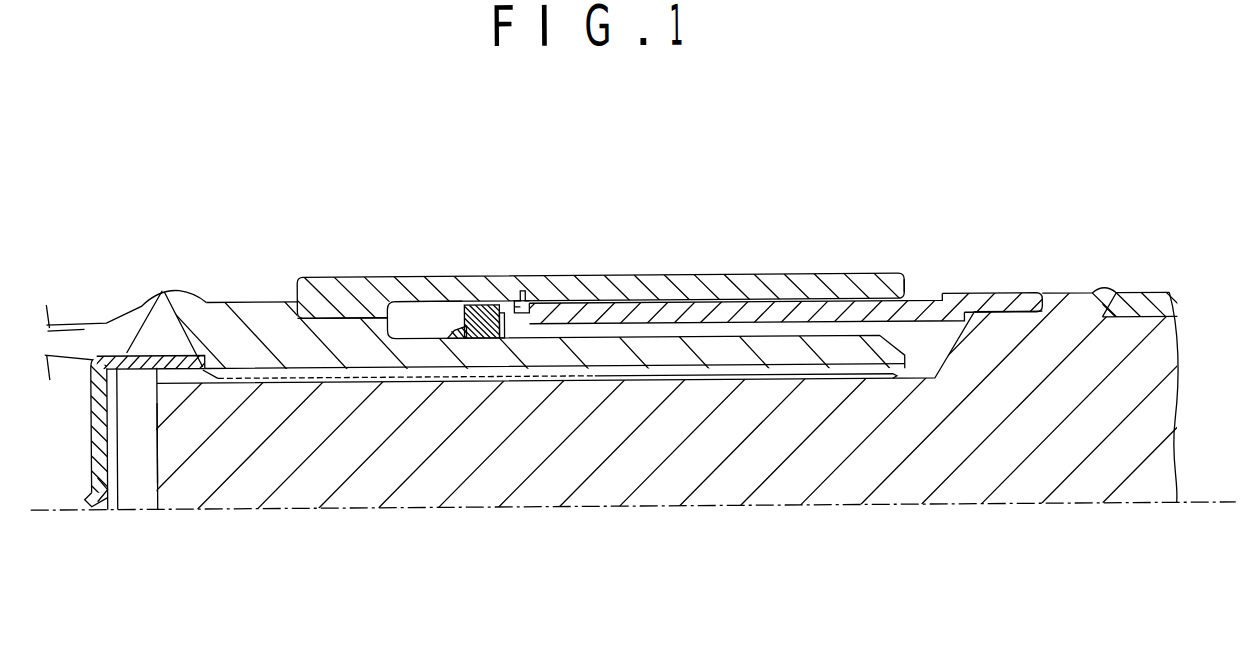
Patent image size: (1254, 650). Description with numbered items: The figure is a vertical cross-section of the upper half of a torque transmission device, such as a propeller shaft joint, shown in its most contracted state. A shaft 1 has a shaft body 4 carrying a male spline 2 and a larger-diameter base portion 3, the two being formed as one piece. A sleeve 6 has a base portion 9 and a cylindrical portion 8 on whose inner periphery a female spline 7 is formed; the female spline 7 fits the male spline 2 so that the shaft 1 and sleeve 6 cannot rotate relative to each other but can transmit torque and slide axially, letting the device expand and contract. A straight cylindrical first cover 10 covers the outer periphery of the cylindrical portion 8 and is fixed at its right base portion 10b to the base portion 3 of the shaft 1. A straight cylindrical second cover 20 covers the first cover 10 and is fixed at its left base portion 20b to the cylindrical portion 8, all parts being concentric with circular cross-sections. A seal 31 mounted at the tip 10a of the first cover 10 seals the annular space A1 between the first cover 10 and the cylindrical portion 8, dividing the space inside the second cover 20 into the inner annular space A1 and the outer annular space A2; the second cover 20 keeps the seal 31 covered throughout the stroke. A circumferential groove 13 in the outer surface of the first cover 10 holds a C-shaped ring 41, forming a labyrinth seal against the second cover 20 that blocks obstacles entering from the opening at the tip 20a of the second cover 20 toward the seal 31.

The shaft 1 is at (617, 478).
The male spline 2 is at (232, 369).
The base portion 3 is at (1068, 341).
The shaft body 4 is at (272, 410).
The sleeve 6 is at (337, 327).
The female spline 7 is at (826, 373).
The cylindrical portion 8 is at (771, 349).
The base portion 9 is at (66, 319).
The first cover 10 is at (723, 313).
The tip 10a is at (520, 290).
The base portion 10b is at (1002, 301).
The groove 13 is at (535, 274).
The second cover 20 is at (828, 286).
The tip 20a is at (880, 299).
The base portion 20b is at (407, 293).
The seal 31 is at (450, 301).
The ring 41 is at (520, 300).
The annular space A1 is at (627, 328).
The annular space A2 is at (415, 316).